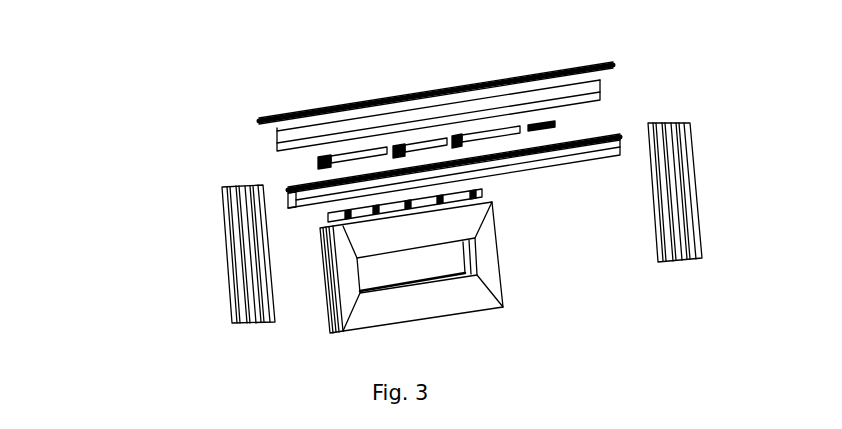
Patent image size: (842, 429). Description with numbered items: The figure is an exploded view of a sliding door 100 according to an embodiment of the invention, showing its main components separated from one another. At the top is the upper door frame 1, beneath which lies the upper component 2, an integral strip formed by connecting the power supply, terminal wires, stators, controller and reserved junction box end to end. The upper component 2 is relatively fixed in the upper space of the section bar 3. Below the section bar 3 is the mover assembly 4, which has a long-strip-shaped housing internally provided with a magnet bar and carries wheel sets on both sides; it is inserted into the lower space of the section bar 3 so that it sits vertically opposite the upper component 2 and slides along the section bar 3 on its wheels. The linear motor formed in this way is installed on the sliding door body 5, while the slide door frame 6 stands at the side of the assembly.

The sliding door 100 is at (215, 95).
The upper door frame 1 is at (598, 78).
The upper component 2 is at (582, 118).
The section bar 3 is at (630, 128).
The mover assembly 4 is at (484, 188).
The sliding door body 5 is at (496, 230).
The slide door frame 6 is at (222, 210).